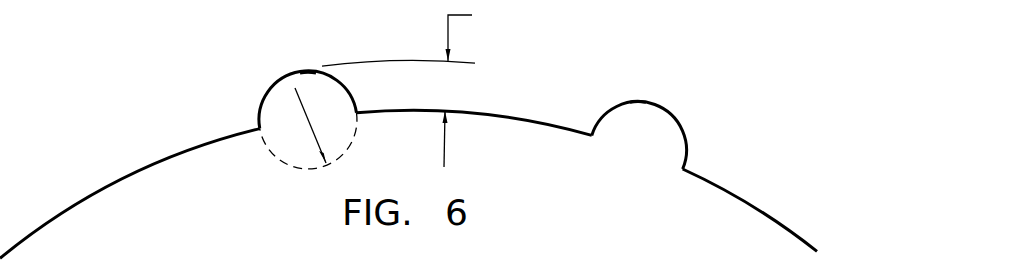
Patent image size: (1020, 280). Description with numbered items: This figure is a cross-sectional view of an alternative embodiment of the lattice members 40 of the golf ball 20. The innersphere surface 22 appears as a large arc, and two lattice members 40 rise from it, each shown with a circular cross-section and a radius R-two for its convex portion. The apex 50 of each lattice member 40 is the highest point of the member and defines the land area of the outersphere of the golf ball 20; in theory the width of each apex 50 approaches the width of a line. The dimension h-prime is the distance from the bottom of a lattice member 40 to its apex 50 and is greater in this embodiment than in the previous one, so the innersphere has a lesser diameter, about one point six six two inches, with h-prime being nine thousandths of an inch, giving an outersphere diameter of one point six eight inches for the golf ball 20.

The golf ball 20 is at (408, 129).
The innersphere surface 22 is at (143, 168).
The lattice member 40 is at (270, 90).
The apex 50 is at (283, 71).